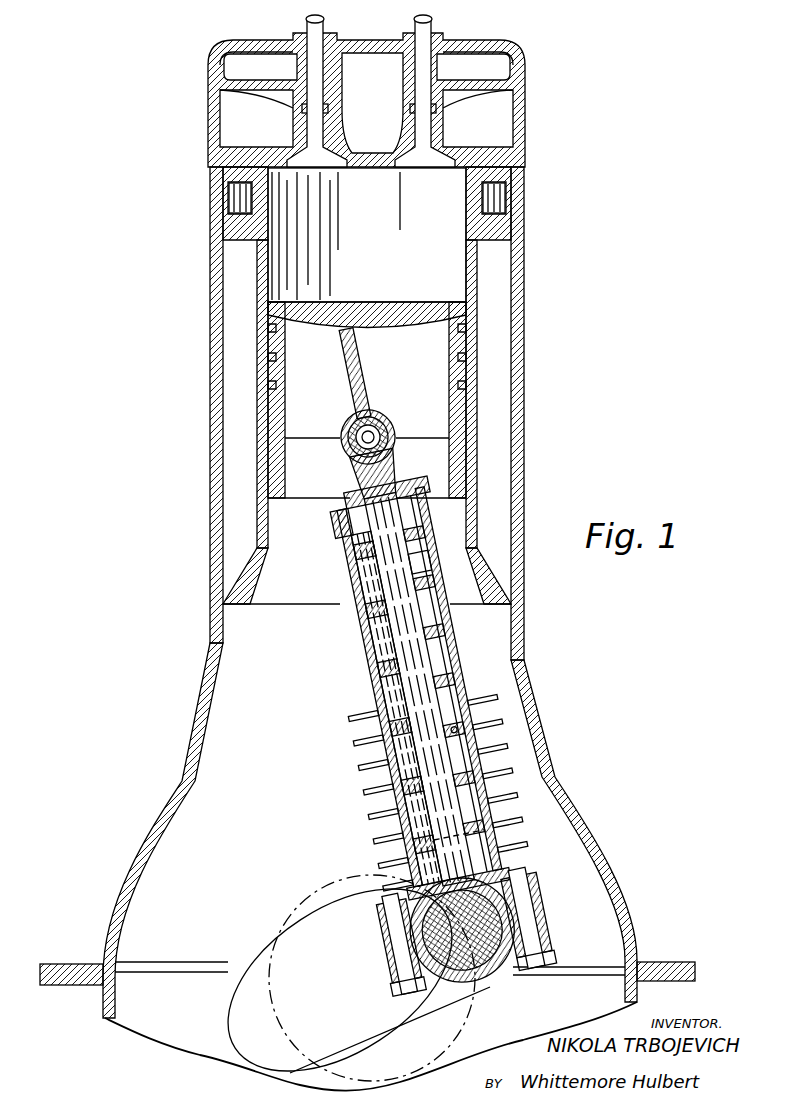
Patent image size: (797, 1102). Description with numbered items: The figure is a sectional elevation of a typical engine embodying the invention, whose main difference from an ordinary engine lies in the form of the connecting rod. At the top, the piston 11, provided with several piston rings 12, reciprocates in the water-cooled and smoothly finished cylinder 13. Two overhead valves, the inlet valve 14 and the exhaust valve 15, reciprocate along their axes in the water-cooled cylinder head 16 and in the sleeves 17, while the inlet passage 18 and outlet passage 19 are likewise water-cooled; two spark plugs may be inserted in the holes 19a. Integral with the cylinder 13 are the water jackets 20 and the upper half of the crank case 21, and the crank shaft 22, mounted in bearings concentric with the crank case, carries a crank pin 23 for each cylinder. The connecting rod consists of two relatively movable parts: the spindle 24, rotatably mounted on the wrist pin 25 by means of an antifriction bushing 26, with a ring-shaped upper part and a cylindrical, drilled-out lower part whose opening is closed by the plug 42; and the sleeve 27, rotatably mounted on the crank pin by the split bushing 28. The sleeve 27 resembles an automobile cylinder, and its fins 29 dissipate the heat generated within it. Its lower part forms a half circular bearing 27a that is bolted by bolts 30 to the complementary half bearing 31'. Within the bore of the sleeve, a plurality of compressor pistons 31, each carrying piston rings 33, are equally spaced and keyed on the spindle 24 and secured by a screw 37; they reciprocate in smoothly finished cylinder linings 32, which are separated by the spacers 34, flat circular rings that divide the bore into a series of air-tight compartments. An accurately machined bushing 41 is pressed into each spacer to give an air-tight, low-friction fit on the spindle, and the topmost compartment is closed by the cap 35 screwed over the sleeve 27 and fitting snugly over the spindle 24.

The piston 11 is at (420, 290).
The piston rings 12 is at (280, 340).
The cylinder 13 is at (470, 300).
The inlet valve 14 is at (325, 24).
The exhaust valve 15 is at (433, 24).
The cylinder head 16 is at (517, 48).
The sleeves 17 is at (302, 108).
The inlet passage 18 is at (214, 122).
The outlet passage 19 is at (520, 112).
The spark plug holes 19a is at (218, 205).
The water jackets 20 is at (505, 276).
The crank case 21 is at (574, 806).
The crank shaft 22 is at (363, 877).
The crank pin 23 is at (476, 963).
The spindle 24 is at (392, 460).
The wrist pin 25 is at (396, 438).
The antifriction bushing 26 is at (388, 420).
The sleeve 27 is at (456, 660).
The half circular bearing 27a is at (526, 889).
The split bushing 28 is at (460, 1002).
The fins 29 is at (507, 768).
The bolts 30 is at (550, 960).
The compressor pistons 31 is at (404, 681).
The complementary half bearing 31' is at (550, 917).
The cylinder linings 32 is at (353, 567).
The piston rings 33 is at (360, 636).
The spacers 34 is at (350, 613).
The cap 35 is at (333, 529).
The screw 37 is at (437, 628).
The bushing 41 is at (447, 720).
The plug 42 is at (508, 828).